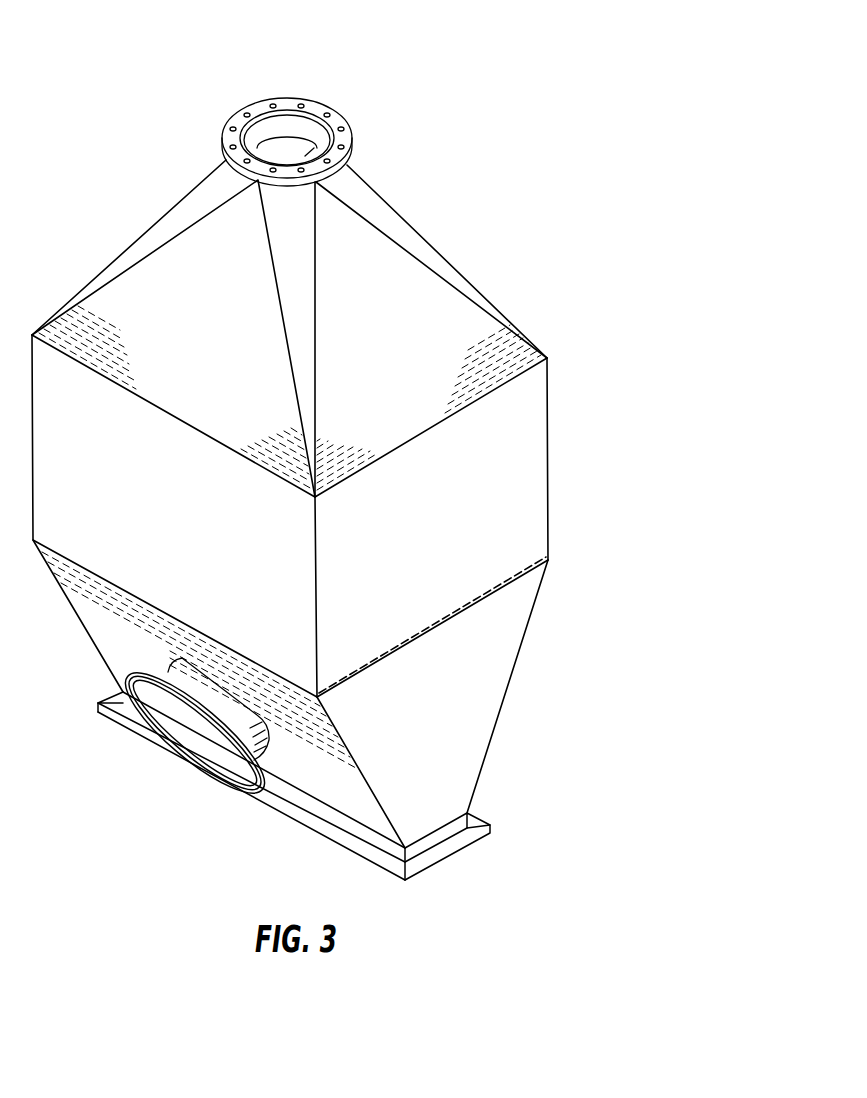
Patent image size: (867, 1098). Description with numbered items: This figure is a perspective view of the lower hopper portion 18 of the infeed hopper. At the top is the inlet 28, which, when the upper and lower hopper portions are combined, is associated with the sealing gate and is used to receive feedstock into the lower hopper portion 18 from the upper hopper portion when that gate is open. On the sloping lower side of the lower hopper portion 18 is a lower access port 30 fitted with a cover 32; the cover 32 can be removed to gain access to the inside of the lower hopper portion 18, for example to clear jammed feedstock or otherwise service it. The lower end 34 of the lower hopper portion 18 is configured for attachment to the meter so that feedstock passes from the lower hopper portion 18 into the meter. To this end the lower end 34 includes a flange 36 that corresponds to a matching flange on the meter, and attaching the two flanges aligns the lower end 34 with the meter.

The lower hopper portion 18 is at (470, 52).
The inlet 28 is at (286, 152).
The lower access port 30 is at (147, 735).
The cover 32 is at (193, 733).
The lower end 34 is at (453, 857).
The flange 36 is at (328, 828).